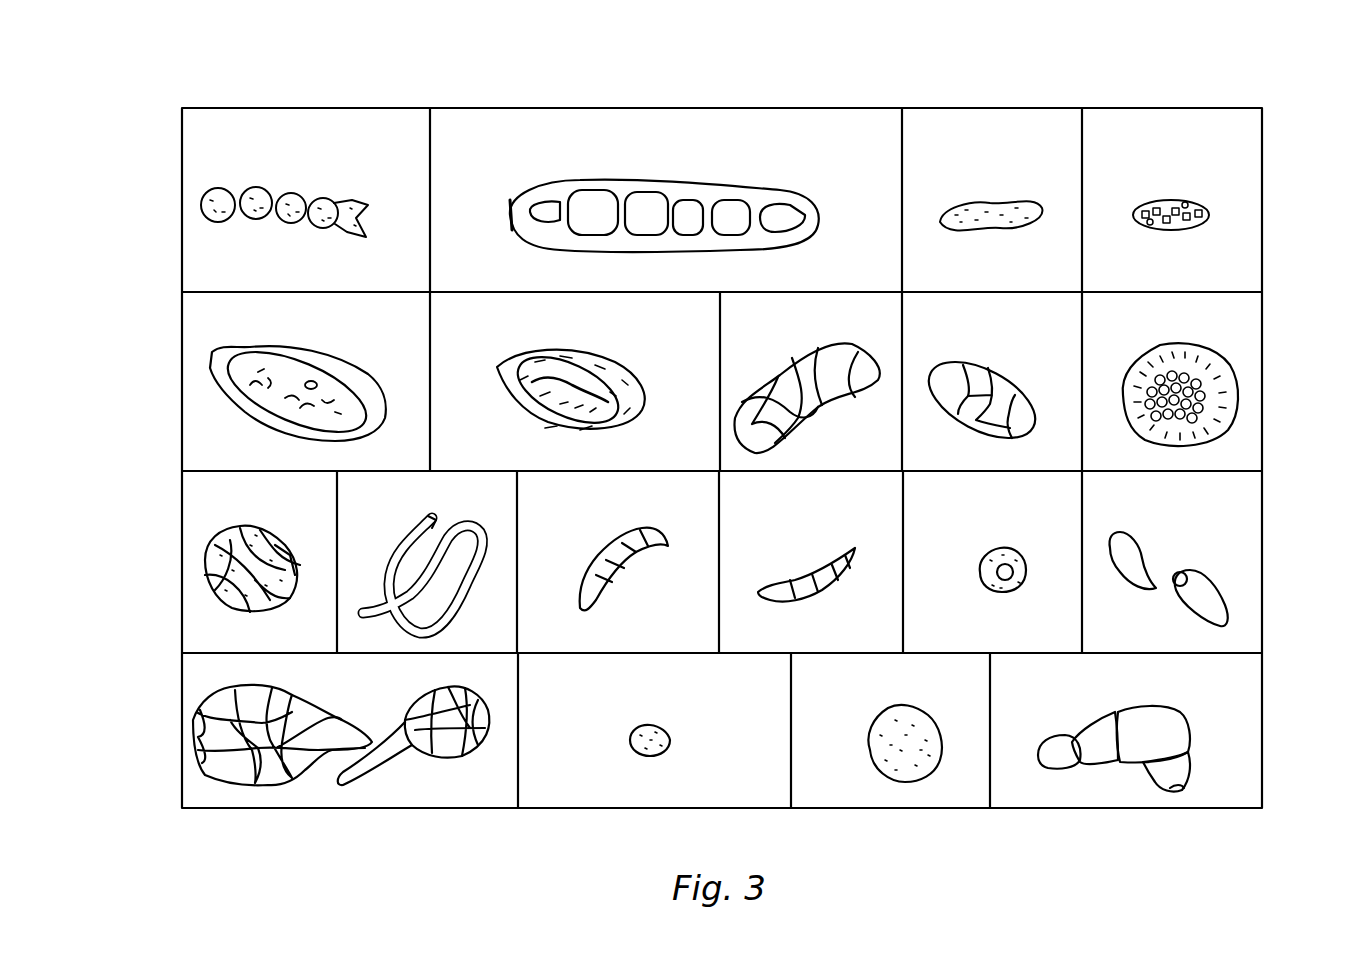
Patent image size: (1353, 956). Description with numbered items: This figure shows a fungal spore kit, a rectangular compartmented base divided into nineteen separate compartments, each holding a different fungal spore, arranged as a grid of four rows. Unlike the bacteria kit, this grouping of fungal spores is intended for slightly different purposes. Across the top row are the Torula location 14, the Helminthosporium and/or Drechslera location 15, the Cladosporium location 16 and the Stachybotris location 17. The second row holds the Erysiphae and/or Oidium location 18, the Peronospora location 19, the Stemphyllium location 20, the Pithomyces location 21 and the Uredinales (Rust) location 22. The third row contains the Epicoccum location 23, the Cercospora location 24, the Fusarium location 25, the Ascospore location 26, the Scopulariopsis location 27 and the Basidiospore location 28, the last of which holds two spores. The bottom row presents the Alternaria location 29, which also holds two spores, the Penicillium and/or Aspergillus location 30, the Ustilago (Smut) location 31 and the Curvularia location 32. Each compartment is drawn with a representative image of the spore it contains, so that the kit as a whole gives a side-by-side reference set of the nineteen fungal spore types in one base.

The Torula location 14 is at (210, 258).
The Helminthosporium and/or Drechslera location 15 is at (445, 130).
The Cladosporium location 16 is at (920, 128).
The Stachybotris location 17 is at (1236, 246).
The Erysiphae and/or Oidium location 18 is at (210, 433).
The Peronospora location 19 is at (455, 322).
The Stemphyllium location 20 is at (880, 320).
The Pithomyces location 21 is at (1064, 322).
The Uredinales (Rust) location 22 is at (1250, 432).
The Epicoccum location 23 is at (215, 632).
The Cercospora location 24 is at (480, 636).
The Fusarium location 25 is at (694, 636).
The Ascospore location 26 is at (884, 636).
The Scopulariopsis location 27 is at (1066, 636).
The Basidiospore location 28 is at (1246, 630).
The Alternaria location 29 is at (433, 780).
The Penicillium and/or Aspergillus location 30 is at (626, 780).
The Ustilago (Smut) location 31 is at (972, 780).
The Curvularia location 32 is at (1240, 778).